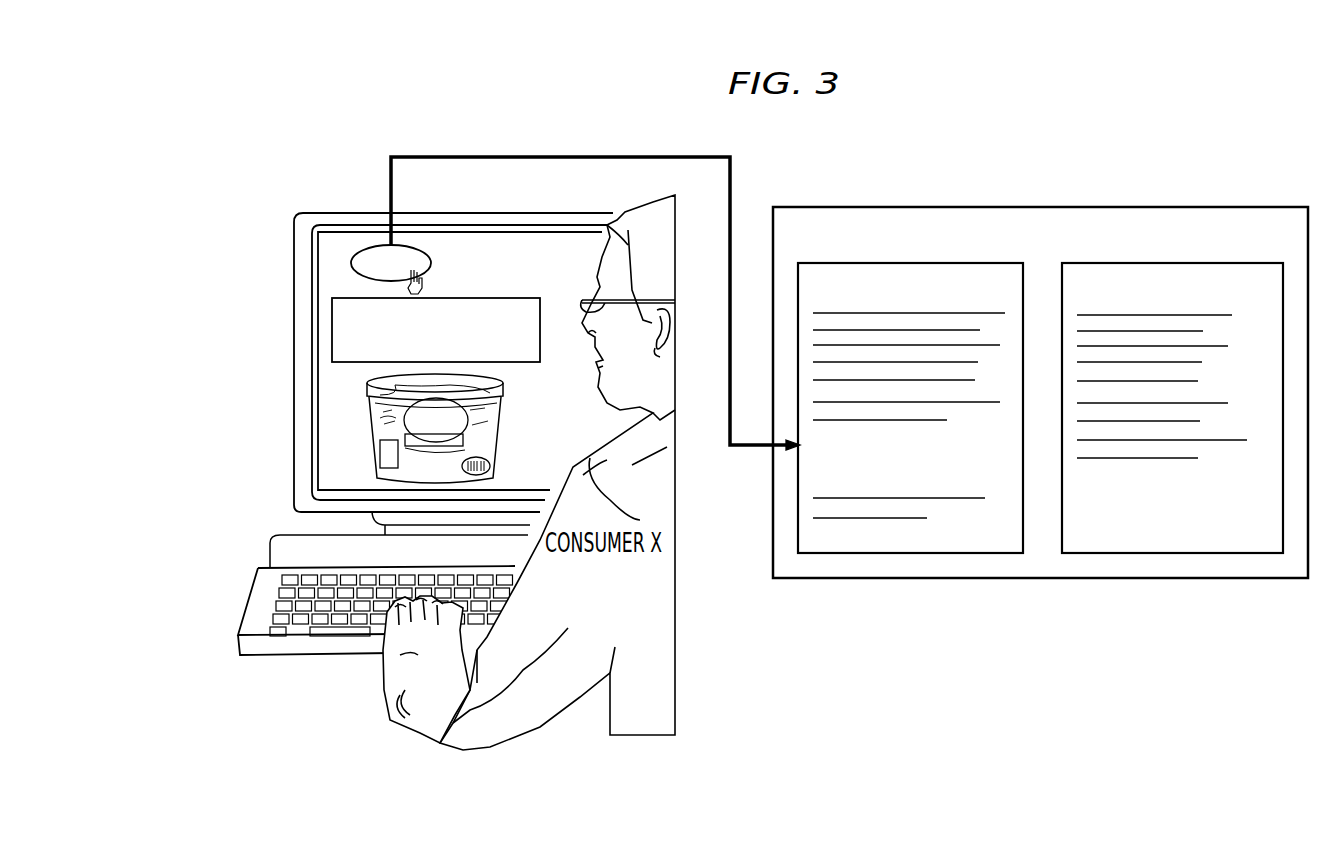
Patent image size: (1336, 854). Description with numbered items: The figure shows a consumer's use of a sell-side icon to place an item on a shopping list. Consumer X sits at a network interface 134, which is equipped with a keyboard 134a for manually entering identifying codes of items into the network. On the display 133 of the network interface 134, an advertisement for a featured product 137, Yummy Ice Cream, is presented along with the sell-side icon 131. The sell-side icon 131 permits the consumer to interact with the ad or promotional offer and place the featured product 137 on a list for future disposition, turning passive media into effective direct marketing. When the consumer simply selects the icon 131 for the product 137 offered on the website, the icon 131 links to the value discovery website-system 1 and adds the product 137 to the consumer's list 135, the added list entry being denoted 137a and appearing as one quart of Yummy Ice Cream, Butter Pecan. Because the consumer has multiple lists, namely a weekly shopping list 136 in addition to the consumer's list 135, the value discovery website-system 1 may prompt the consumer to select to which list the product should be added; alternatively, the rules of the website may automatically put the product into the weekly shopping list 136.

The value discovery website-system 1 is at (1030, 207).
The sell-side icon 131 is at (351, 263).
The display screen 133 is at (338, 415).
The network interface 134 is at (338, 211).
The keyboard 134a is at (294, 647).
The consumer's list 135 is at (891, 263).
The weekly shopping list 136 is at (1193, 263).
The product 137 is at (503, 428).
The added list entry 137a is at (808, 470).